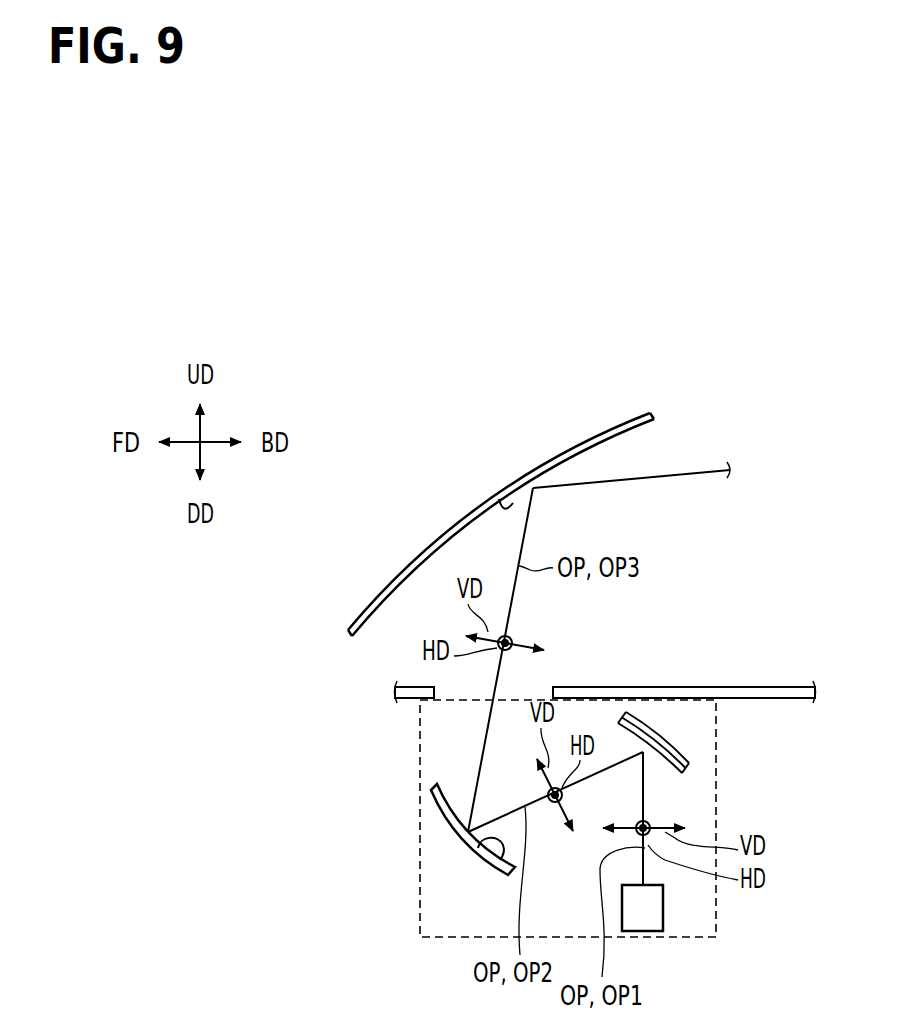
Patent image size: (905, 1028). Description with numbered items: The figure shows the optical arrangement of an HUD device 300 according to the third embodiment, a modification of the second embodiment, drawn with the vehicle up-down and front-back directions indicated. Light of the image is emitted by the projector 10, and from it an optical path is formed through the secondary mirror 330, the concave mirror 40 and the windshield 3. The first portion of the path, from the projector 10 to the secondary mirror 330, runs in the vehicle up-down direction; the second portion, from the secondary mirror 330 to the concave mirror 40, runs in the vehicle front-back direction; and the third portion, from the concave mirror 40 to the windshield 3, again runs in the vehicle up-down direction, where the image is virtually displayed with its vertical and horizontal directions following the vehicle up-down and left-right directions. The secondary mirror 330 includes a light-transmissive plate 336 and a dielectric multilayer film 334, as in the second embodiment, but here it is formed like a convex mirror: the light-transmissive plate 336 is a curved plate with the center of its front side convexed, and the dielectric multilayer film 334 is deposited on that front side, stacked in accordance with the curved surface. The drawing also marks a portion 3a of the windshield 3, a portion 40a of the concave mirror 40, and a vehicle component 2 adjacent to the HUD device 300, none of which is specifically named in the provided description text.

The dashboard 2 is at (749, 686).
The windshield 3 is at (474, 513).
The windshield projection portion 3a is at (505, 497).
The projector 10 is at (664, 910).
The concave mirror 40 is at (440, 832).
The mirror protrusion 40a is at (485, 858).
The HUD device 300 is at (416, 914).
The secondary mirror 330 is at (734, 766).
The dielectric multilayer film 334 is at (686, 774).
The light-transmissive plate 336 is at (690, 768).